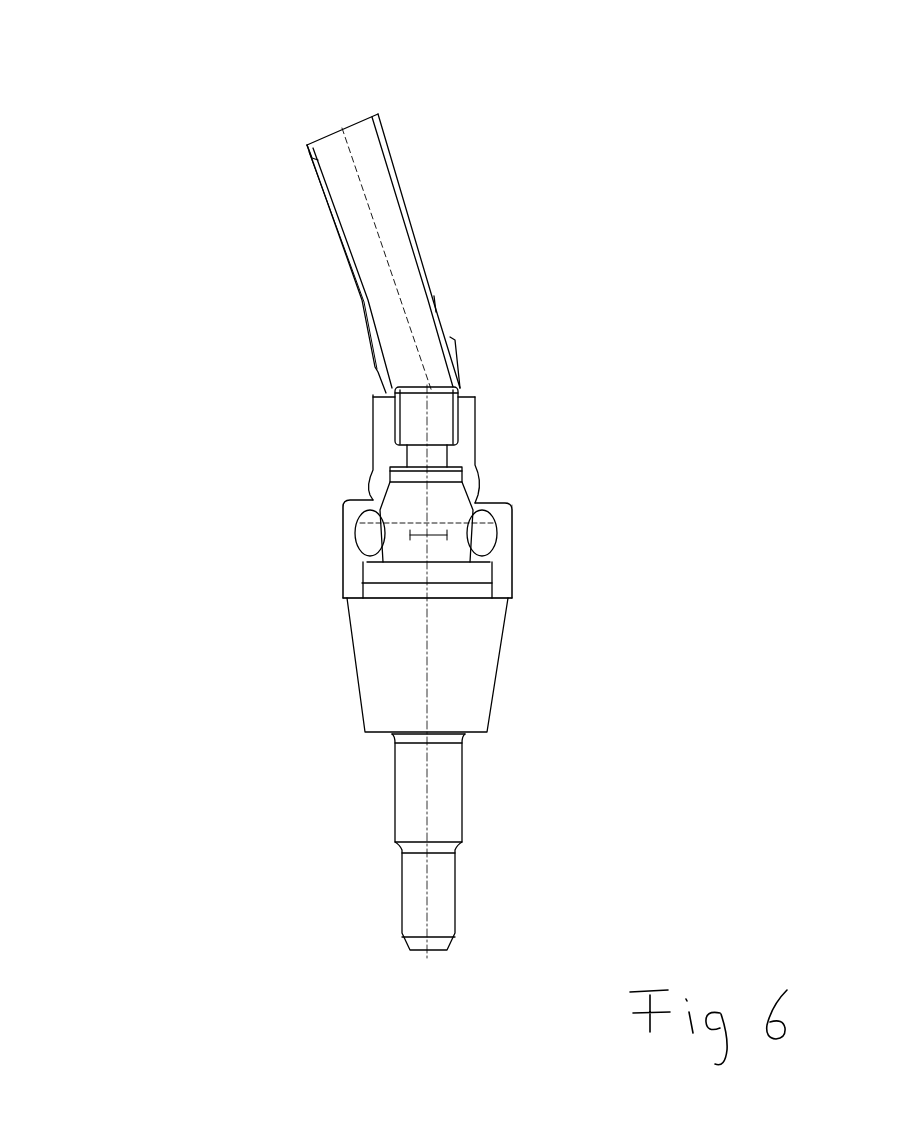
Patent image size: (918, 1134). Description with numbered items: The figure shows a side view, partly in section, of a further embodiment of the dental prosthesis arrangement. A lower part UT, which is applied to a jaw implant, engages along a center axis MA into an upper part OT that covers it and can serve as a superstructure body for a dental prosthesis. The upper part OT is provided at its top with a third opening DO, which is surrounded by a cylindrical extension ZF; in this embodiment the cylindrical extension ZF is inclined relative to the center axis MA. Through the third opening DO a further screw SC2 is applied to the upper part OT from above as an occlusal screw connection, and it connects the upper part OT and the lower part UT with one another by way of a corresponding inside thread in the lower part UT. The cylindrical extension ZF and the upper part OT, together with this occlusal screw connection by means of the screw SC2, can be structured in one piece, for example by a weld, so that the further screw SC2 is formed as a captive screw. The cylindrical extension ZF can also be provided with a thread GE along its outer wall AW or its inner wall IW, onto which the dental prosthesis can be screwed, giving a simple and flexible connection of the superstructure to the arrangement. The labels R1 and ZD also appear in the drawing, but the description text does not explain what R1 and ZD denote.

The third opening DO is at (393, 8).
The center axis MA is at (427, 181).
The outer wall AW is at (307, 238).
The inner wall IW is at (320, 140).
The thread GE is at (322, 195).
The cylindrical extension ZF is at (435, 290).
The further screw SC2 is at (455, 422).
The upper part OT is at (477, 467).
The lower part UT is at (363, 578).
The first shank section R1 is at (467, 810).
The joint assembly ZD is at (62, 297).